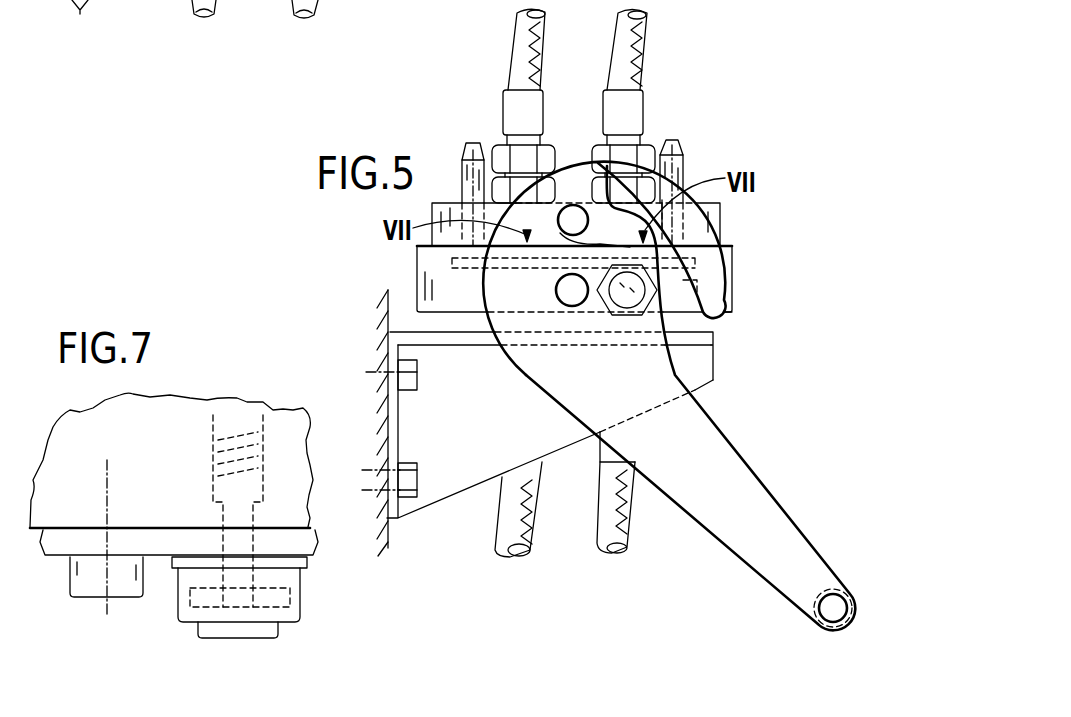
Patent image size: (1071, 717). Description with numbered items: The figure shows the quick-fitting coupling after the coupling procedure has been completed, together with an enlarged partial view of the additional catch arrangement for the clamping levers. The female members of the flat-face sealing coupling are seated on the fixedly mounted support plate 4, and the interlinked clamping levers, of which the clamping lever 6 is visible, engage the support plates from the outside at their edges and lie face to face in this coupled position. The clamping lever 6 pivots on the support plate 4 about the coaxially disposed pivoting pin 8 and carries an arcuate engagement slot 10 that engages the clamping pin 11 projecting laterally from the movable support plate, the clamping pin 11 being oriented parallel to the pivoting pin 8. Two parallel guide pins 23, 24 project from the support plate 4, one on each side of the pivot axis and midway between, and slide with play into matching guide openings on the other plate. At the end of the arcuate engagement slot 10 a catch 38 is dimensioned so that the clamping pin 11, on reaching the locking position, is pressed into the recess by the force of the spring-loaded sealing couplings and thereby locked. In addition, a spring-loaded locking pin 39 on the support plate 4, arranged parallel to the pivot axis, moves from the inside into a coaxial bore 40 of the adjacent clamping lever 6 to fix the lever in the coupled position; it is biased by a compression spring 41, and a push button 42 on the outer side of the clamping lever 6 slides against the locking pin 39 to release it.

In FIG. 7, the support plate 4 is at (60, 453).
In FIG. 5, the clamping lever 6 is at (783, 512).
In FIG. 7, the clamping lever 6 is at (158, 550).
In FIG. 5, the pivoting pin 8 is at (567, 296).
In FIG. 7, the pivoting pin 8 is at (90, 588).
In FIG. 5, the arcuate engagement slot 10 is at (635, 200).
In FIG. 5, the clamping pin 11 is at (541, 196).
In FIG. 5, the guide pin 23 is at (467, 148).
In FIG. 5, the guide pin 24 is at (672, 143).
In FIG. 5, the catch 38 is at (571, 214).
In FIG. 7, the locking pin 39 is at (245, 516).
In FIG. 7, the coaxial bore 40 is at (252, 542).
In FIG. 7, the screw 41 is at (235, 442).
In FIG. 5, the push button 42 is at (625, 302).
In FIG. 7, the push button 42 is at (227, 640).